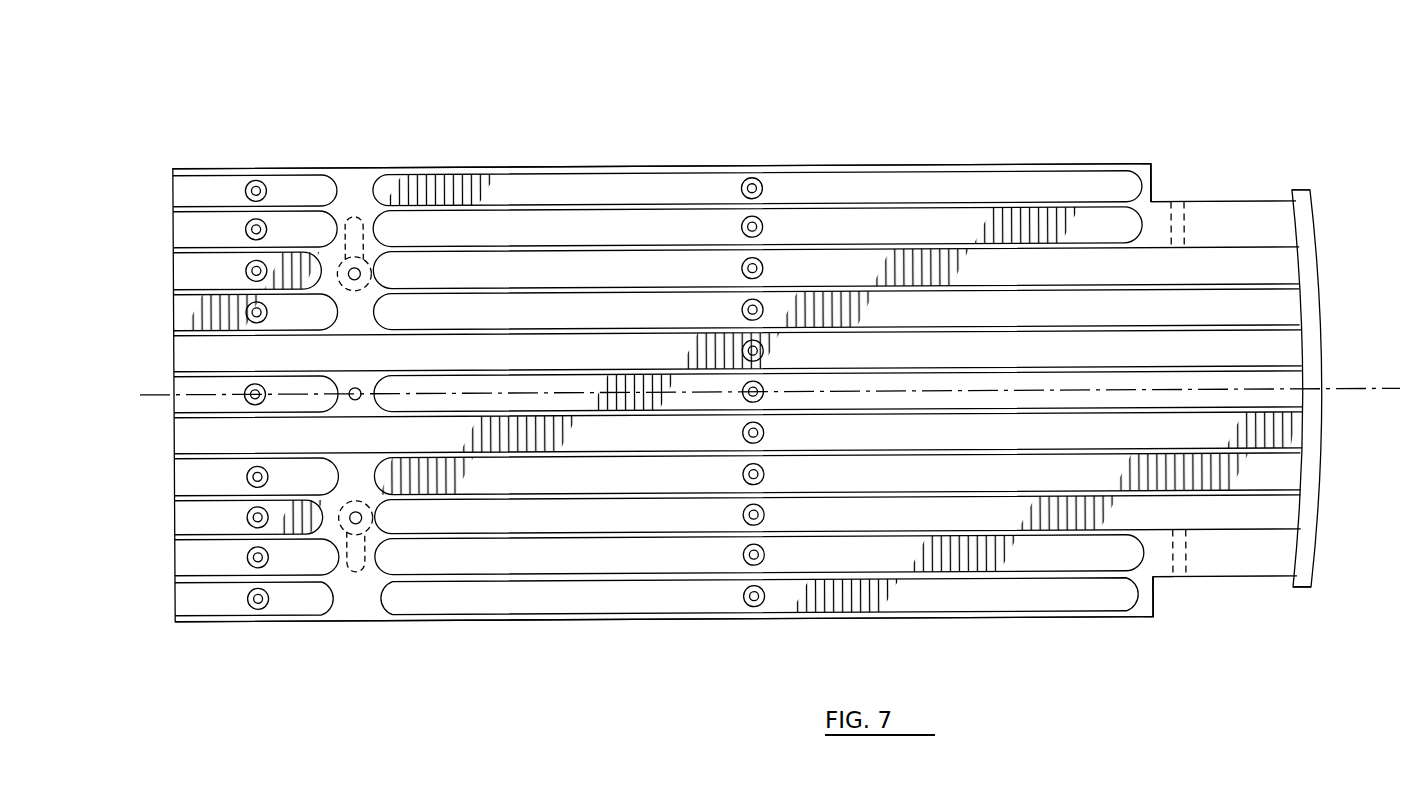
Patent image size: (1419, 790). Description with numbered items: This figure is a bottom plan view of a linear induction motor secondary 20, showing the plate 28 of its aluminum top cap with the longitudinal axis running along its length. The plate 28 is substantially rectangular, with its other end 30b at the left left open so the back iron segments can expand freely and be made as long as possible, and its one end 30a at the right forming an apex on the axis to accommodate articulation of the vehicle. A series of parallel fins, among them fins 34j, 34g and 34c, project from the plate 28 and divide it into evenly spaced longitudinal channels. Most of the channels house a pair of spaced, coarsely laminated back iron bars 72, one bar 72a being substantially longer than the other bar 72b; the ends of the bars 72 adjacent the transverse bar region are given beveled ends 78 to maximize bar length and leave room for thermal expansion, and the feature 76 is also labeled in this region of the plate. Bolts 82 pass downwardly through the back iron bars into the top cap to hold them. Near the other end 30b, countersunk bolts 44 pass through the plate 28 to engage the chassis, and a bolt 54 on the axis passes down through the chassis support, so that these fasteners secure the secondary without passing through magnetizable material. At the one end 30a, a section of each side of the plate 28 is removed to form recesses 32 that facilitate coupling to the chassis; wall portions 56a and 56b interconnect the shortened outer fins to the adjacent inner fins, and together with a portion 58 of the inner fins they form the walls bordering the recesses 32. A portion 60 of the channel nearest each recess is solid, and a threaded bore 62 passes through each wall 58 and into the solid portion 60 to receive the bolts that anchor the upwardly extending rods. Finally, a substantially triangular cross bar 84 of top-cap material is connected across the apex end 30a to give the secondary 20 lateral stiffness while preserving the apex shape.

The LIM secondary 20 is at (627, 118).
The plate 28 is at (198, 163).
The back iron bars 72 is at (298, 207).
The longer back iron bar 72a is at (516, 171).
The shorter back iron bar 72b is at (190, 603).
The bolts 82 is at (763, 223).
The fin 34j is at (174, 259).
The fin 34g is at (192, 369).
The fin 34c is at (190, 533).
The bolt 54 is at (360, 387).
The web 76 is at (336, 466).
The bolts 44 is at (370, 513).
The beveled end 78 is at (1137, 235).
The wall portion 56b is at (1158, 170).
The wall portion 56a is at (1158, 604).
The recesses 32 is at (1178, 186).
The wall portion of fin 58 is at (1252, 203).
The threaded bore 62 is at (1187, 236).
The cross bar 84 is at (1326, 283).
The solid portion of channel 60 is at (1281, 231).
The one end of plate 30a is at (1314, 600).
The other end of plate 30b is at (241, 630).